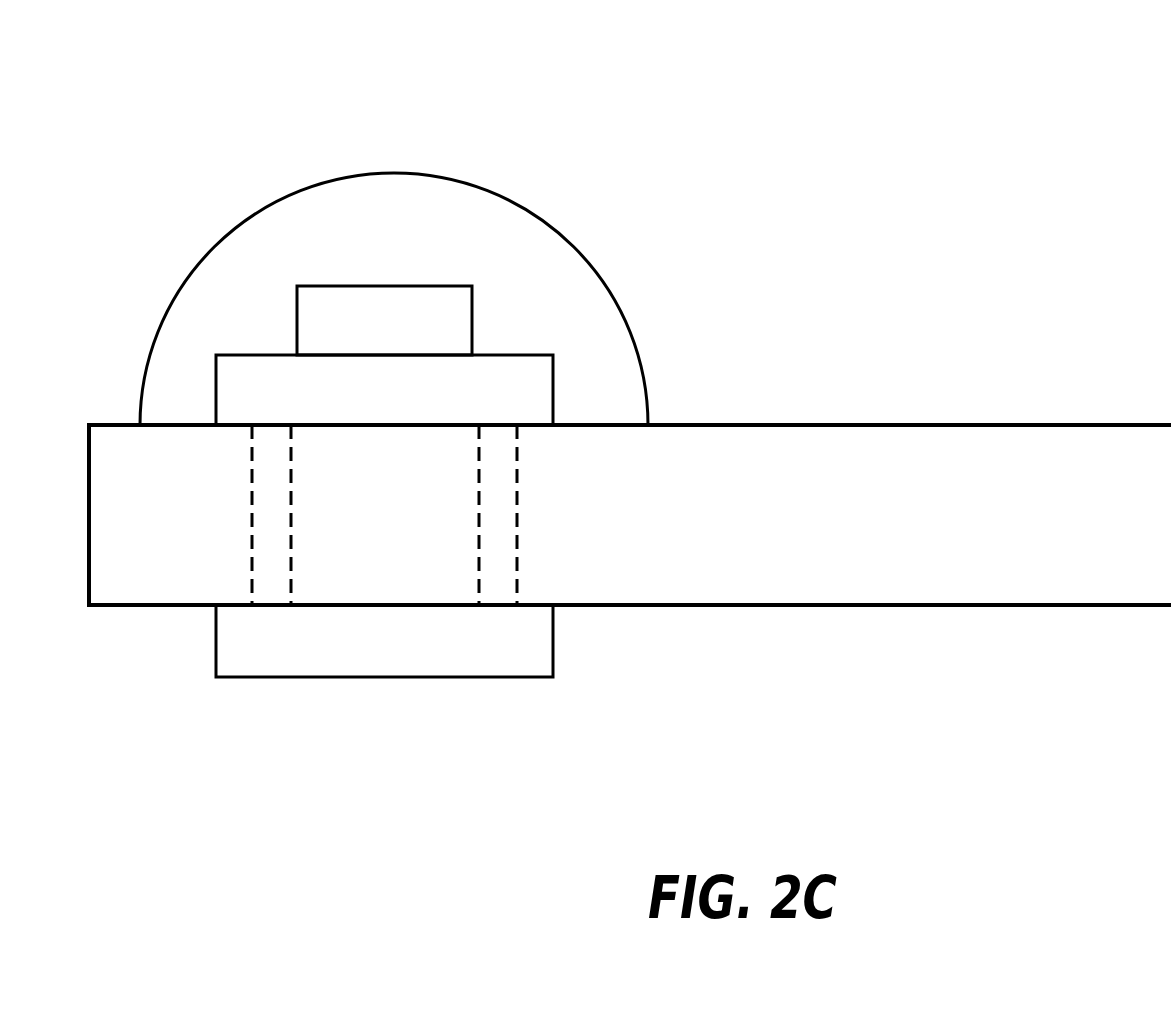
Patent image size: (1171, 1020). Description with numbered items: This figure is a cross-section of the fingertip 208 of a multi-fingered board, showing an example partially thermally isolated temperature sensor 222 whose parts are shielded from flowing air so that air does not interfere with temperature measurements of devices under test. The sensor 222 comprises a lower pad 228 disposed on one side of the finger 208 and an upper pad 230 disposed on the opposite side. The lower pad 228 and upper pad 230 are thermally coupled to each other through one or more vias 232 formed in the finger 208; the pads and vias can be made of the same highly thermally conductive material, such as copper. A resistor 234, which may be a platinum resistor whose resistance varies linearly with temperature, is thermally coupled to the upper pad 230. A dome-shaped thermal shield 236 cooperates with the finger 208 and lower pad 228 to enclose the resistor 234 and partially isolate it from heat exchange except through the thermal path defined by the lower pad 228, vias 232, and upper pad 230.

The fingertip 208 is at (913, 425).
The PTI temperature sensor 222 is at (647, 117).
The lower pad 228 is at (553, 637).
The upper pad 230 is at (553, 388).
The vias 232 is at (479, 492).
The resistor 234 is at (385, 286).
The thermal shield 236 is at (587, 257).